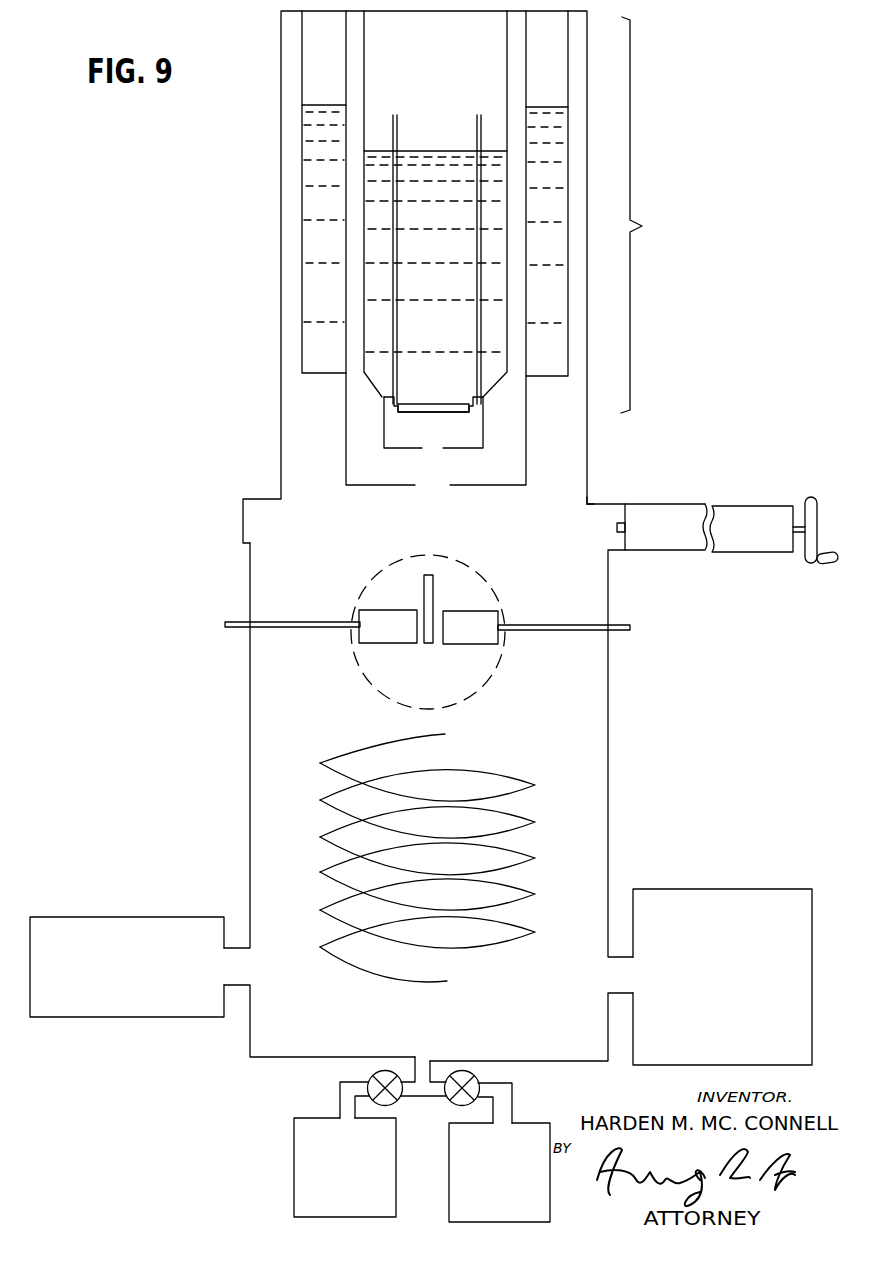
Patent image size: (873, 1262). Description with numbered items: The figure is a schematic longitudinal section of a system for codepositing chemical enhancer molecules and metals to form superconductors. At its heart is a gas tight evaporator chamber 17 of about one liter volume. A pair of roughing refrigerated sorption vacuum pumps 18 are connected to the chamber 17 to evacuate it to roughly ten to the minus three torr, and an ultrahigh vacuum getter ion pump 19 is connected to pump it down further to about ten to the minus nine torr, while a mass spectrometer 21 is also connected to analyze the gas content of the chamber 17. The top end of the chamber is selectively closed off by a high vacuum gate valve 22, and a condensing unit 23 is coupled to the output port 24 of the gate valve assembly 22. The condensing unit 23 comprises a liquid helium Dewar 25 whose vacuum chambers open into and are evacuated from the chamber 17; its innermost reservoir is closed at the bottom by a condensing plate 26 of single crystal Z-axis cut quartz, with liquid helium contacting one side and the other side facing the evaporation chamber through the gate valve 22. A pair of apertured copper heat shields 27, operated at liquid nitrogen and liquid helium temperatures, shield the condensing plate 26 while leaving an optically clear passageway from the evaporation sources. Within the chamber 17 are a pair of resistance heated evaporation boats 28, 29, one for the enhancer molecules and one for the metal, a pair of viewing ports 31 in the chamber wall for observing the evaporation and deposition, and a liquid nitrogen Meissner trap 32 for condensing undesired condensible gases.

The evaporator chamber 17 is at (551, 740).
The sorption vacuum pumps 18 is at (449, 1178).
The ion pump 19 is at (713, 894).
The mass spectrometer 21 is at (155, 917).
The gate valve 22 is at (686, 536).
The condensing unit 23 is at (510, 248).
The output port 24 is at (586, 503).
The liquid helium Dewar 25 is at (278, 221).
The condensing plate 26 is at (437, 406).
The copper heat shields 27 is at (484, 437).
The evaporation boat 28 is at (386, 644).
The evaporation boat 29 is at (464, 645).
The viewing ports 31 is at (505, 660).
The liquid nitrogen Meissner trap 32 is at (525, 851).